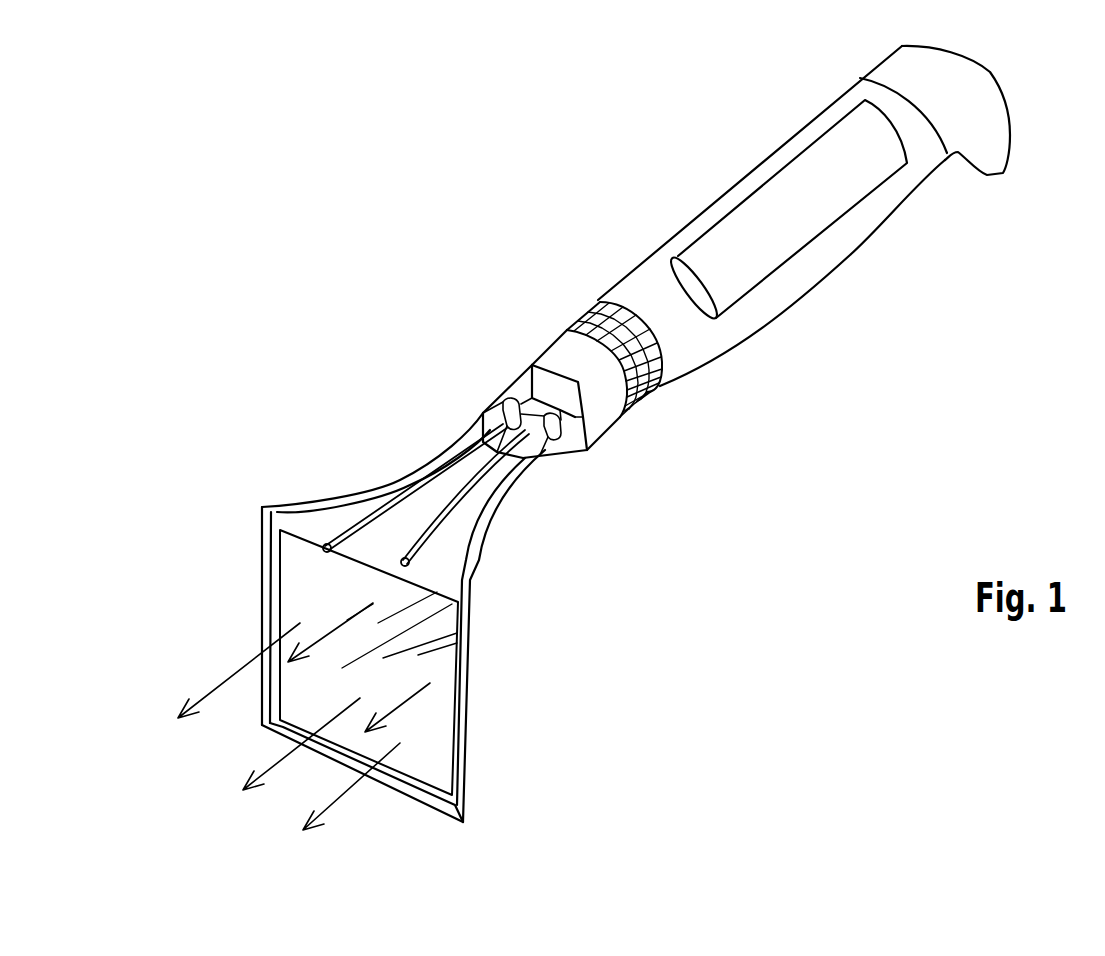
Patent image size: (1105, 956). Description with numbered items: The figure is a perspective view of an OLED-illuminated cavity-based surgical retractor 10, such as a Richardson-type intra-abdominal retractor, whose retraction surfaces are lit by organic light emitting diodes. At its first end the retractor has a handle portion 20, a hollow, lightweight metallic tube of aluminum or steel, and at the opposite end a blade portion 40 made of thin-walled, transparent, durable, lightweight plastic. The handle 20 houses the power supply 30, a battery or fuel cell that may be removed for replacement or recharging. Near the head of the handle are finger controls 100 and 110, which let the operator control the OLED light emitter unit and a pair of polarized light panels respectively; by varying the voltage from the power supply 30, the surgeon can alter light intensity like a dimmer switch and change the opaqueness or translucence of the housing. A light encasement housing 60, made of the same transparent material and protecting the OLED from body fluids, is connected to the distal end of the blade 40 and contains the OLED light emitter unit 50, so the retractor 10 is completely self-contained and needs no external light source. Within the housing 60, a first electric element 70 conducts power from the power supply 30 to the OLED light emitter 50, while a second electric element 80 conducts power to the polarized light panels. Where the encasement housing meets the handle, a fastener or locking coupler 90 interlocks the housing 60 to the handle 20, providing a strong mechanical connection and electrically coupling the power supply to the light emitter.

The surgical retractor 10 is at (868, 308).
The handle portion 20 is at (747, 172).
The power supply 30 is at (805, 225).
The blade portion 40 is at (235, 590).
The OLED light emitter unit 50 is at (340, 593).
The light encasement housing 60 is at (470, 687).
The first electric element 70 is at (363, 531).
The second electric element 80 is at (423, 550).
The locking coupler 90 is at (583, 425).
The finger control 100 is at (592, 310).
The finger control 110 is at (563, 332).